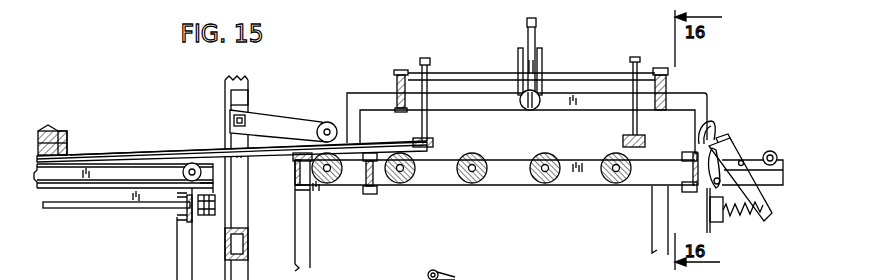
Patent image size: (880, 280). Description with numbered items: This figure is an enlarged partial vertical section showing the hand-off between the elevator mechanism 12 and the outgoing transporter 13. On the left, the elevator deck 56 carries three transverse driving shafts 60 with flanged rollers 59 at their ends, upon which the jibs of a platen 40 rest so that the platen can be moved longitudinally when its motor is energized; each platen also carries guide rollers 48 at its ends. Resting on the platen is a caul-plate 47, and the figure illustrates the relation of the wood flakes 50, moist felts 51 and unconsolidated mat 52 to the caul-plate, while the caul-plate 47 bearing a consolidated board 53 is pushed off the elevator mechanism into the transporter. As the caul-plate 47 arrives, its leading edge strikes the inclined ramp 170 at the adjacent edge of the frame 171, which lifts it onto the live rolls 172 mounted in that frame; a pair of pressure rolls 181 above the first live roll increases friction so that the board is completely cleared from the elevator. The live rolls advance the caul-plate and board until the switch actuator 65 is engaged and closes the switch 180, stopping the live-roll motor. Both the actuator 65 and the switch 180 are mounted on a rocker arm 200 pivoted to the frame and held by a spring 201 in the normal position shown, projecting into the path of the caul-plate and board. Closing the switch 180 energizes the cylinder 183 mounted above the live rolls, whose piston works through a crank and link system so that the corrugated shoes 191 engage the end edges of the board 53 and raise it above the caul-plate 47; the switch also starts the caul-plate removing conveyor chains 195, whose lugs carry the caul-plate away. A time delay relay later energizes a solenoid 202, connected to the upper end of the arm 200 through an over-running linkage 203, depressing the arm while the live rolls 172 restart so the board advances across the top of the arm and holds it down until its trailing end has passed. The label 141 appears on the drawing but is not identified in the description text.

The elevator mechanism 12 is at (137, 138).
The outgoing transporter 13 is at (371, 84).
The platen 40 is at (120, 168).
The caul-plate 47 is at (108, 152).
The guide rollers 48 is at (194, 163).
The wood flakes 50 is at (48, 131).
The moist felts 51 is at (66, 132).
The unconsolidated mat 52 is at (60, 130).
The consolidated board 53 is at (170, 139).
The elevator deck 56 is at (182, 238).
The flanged rollers 59 is at (207, 218).
The transverse driving shafts 60 is at (120, 203).
The switch actuator 65 is at (704, 140).
The stop block 141 is at (627, 138).
The inclined ramp 170 is at (295, 160).
The frame 171 is at (507, 182).
The live rolls 172 is at (329, 184).
The switch 180 is at (733, 145).
The pressure rolls 181 is at (320, 125).
The cylinder 183 is at (529, 111).
The corrugated shoe 191 is at (434, 142).
The caul-plate removing conveyor chains 195 is at (369, 196).
The rocker arm 200 is at (768, 211).
The spring 201 is at (746, 212).
The solenoid 202 is at (722, 222).
The over-running linkage 203 is at (783, 171).